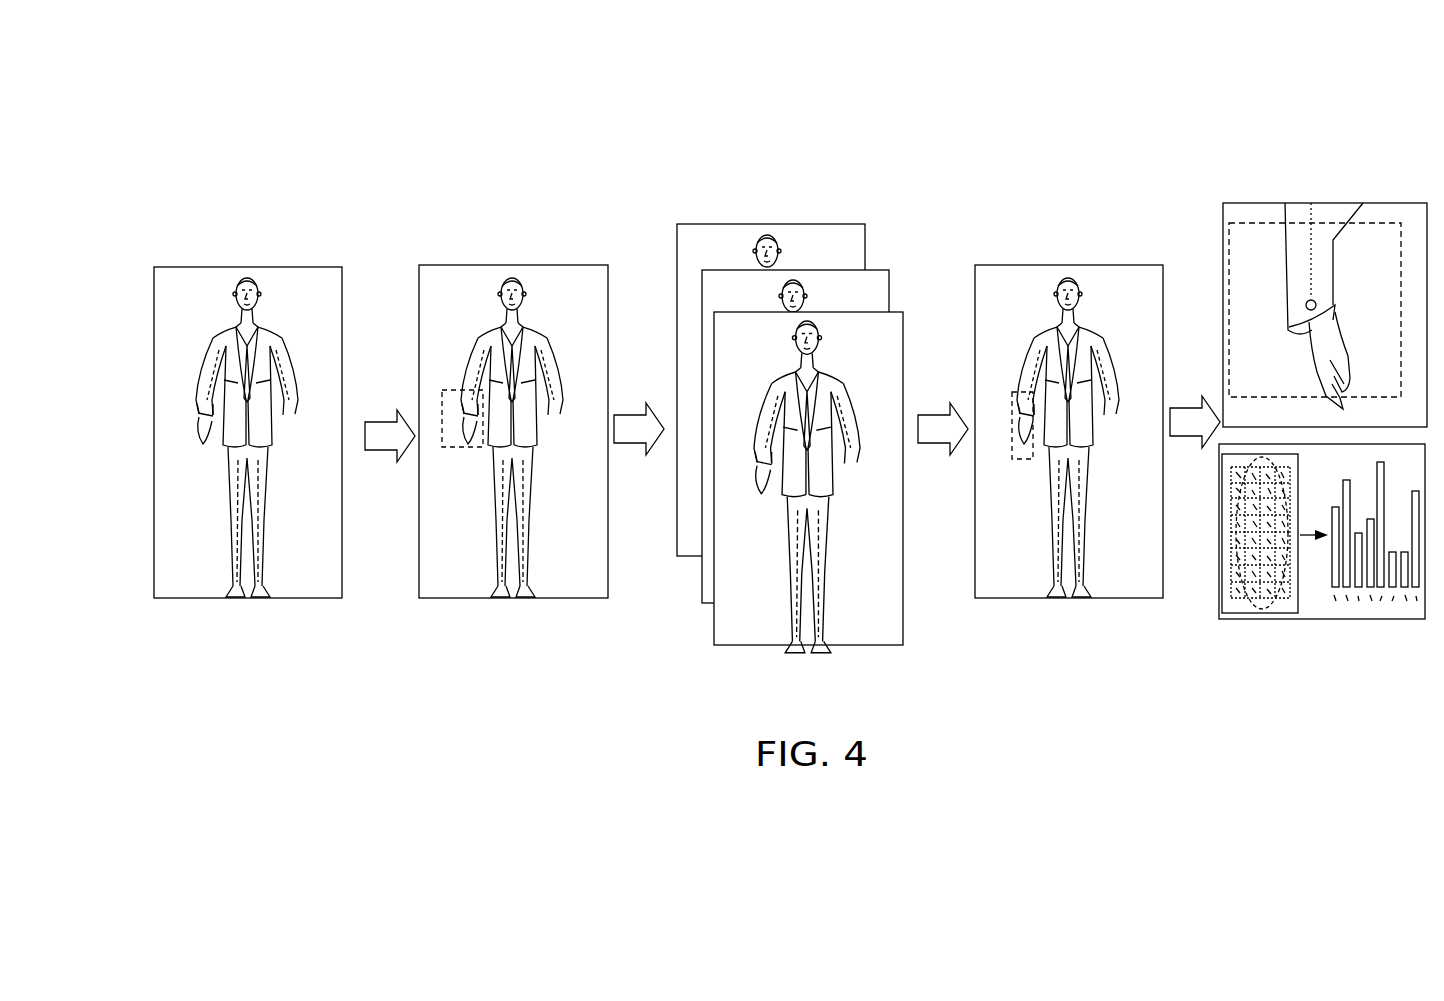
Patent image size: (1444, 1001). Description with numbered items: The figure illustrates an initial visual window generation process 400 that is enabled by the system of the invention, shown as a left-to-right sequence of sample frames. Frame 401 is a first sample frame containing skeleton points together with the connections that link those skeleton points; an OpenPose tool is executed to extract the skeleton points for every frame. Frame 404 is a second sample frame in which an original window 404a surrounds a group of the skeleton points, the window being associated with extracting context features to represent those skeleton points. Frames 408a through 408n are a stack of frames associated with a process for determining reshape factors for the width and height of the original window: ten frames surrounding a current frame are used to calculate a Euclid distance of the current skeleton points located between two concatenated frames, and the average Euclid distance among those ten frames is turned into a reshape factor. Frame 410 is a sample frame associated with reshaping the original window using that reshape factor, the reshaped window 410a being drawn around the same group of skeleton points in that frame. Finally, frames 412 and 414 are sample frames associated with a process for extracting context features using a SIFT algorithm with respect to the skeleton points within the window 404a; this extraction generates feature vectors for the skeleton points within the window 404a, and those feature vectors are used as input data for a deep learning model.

The initial visual window generation process 400 is at (250, 98).
The frame 401 is at (181, 266).
The frame 404 is at (443, 265).
The original window 404a is at (460, 450).
The frame 408a is at (708, 224).
The frame 408n is at (890, 305).
The frame 410 is at (1006, 266).
The tracked hand region 410a is at (1020, 462).
The frame 412 is at (1239, 203).
The frame 414 is at (1216, 612).